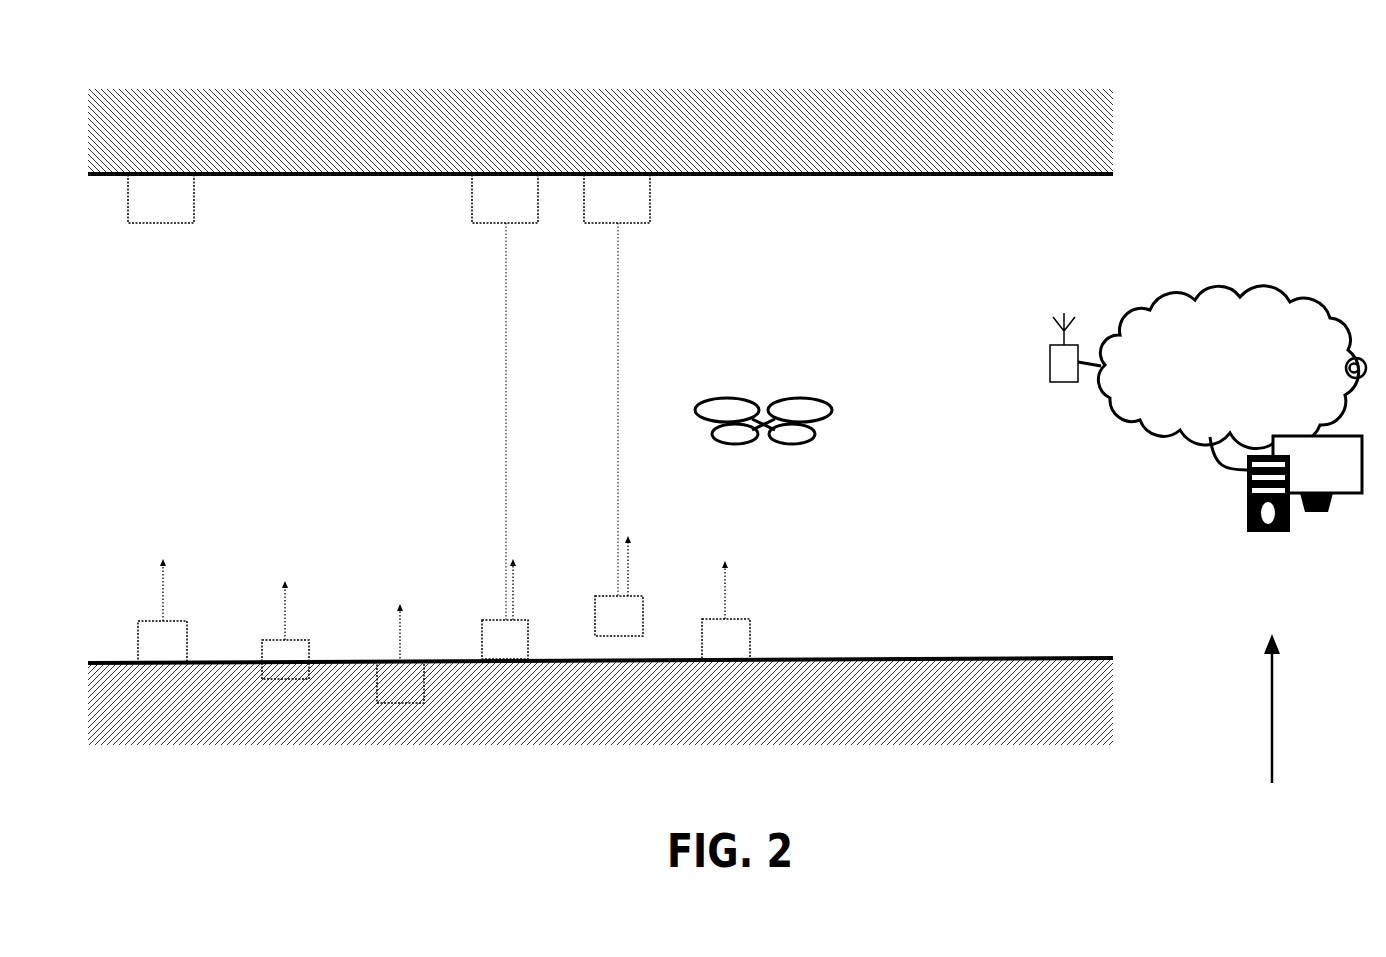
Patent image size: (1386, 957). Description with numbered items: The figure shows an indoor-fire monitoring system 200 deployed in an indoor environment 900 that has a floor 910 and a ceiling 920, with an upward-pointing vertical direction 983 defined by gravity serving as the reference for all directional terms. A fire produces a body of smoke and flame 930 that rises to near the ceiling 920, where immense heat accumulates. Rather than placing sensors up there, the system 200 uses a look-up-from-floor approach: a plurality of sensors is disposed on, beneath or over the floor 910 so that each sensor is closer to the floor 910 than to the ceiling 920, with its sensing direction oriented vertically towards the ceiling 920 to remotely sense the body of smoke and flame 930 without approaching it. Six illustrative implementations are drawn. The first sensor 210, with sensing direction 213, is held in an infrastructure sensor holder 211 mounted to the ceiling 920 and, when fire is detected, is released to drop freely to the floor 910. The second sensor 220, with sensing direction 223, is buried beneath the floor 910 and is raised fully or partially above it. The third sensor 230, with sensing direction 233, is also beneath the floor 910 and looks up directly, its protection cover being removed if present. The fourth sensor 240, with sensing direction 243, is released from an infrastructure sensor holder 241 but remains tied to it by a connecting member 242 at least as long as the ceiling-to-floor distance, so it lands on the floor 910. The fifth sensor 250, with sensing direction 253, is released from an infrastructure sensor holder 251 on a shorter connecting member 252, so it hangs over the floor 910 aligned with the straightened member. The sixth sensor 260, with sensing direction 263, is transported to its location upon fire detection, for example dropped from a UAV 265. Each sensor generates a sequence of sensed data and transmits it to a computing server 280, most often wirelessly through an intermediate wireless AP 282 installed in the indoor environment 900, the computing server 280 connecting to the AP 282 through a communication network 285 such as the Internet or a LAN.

The indoor-fire monitoring system 200 is at (445, 805).
The indoor environment 900 is at (600, 139).
The ceiling 920 is at (1076, 184).
The floor 910 is at (1078, 652).
The body of smoke and flame 930 is at (551, 245).
The infrastructure sensor holder 211 is at (183, 229).
The infrastructure sensor holder 241 is at (524, 229).
The infrastructure sensor holder 251 is at (636, 229).
The connecting member 242 is at (505, 402).
The connecting member 252 is at (617, 402).
The first sensor 210 is at (142, 614).
The sensing direction 213 is at (192, 584).
The second sensor 220 is at (268, 627).
The sensing direction 223 is at (316, 605).
The third sensor 230 is at (383, 651).
The sensing direction 233 is at (429, 628).
The fourth sensor 240 is at (487, 607).
The sensing direction 243 is at (543, 585).
The fifth sensor 250 is at (608, 585).
The sensing direction 253 is at (658, 559).
The sixth sensor 260 is at (710, 609).
The sensing direction 263 is at (756, 589).
The UAV 265 is at (776, 452).
The computing server 280 is at (1297, 515).
The wireless AP 282 is at (1077, 387).
The communication network 285 is at (1232, 328).
The vertical direction 983 is at (1248, 740).